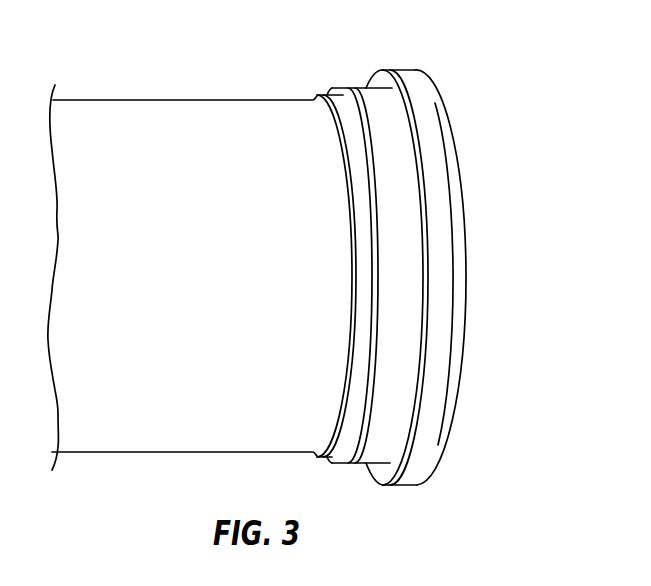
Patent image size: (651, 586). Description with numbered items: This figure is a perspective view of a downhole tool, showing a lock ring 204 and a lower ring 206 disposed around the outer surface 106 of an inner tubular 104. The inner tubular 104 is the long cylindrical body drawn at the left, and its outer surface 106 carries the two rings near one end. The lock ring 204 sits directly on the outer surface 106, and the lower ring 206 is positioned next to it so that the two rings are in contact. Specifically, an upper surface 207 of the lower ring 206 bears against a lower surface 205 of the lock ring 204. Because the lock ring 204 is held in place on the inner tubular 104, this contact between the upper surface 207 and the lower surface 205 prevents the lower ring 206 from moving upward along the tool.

The inner tubular 104 is at (177, 454).
The outer surface 106 is at (163, 100).
The lock ring 204 is at (326, 94).
The lower surface 205 is at (358, 87).
The lower ring 206 is at (392, 69).
The upper surface 207 is at (381, 255).